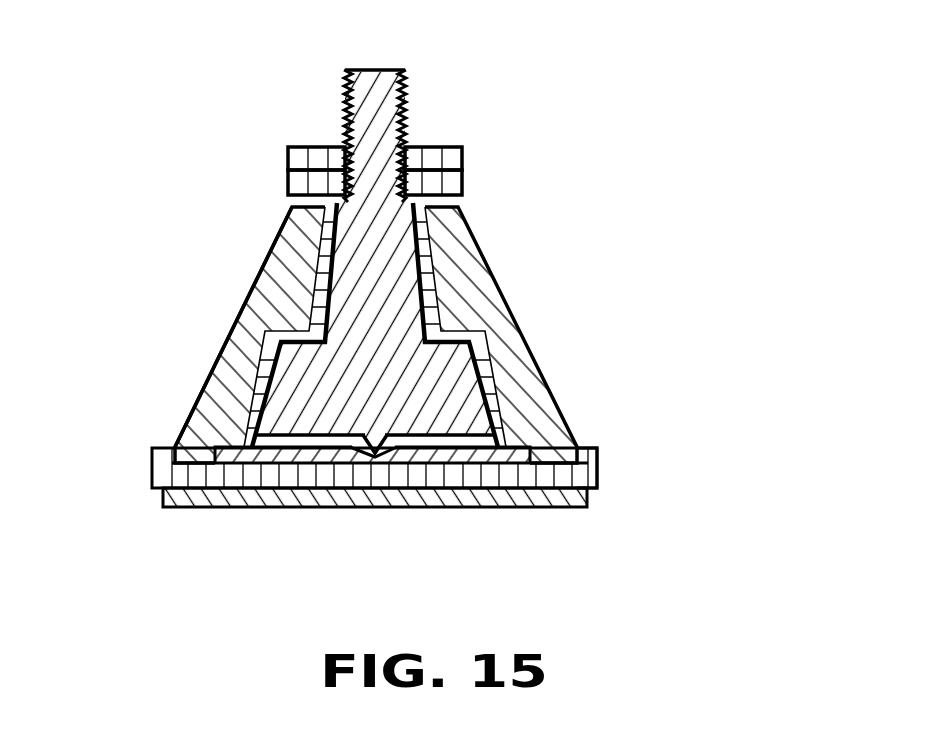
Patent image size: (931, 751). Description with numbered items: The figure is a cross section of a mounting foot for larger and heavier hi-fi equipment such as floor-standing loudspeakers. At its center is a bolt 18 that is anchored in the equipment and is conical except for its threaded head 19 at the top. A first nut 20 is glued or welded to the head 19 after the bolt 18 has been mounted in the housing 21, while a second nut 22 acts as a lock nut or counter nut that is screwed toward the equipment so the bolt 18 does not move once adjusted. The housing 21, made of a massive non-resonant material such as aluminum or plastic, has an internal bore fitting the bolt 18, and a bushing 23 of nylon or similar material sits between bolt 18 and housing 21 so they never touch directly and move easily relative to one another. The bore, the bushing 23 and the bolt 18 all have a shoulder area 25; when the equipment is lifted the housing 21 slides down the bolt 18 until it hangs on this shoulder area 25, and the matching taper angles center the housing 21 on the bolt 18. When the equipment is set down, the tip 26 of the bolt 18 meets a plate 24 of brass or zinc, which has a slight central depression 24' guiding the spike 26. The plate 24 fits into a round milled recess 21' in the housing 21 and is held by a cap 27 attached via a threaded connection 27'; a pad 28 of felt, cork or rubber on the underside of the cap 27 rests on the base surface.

The bolt 18 is at (380, 255).
The threaded head 19 is at (363, 98).
The first nut 20 is at (427, 180).
The housing 21 is at (457, 335).
The milled recess 21' is at (188, 327).
The second nut 22 is at (437, 160).
The bushing 23 is at (487, 355).
The plate 24 is at (476, 427).
The depression 24' is at (358, 508).
The shoulder area 25 is at (258, 283).
The tip 26 is at (380, 453).
The cap 27 is at (446, 481).
The threaded connection 27' is at (709, 445).
The pad 28 is at (233, 495).